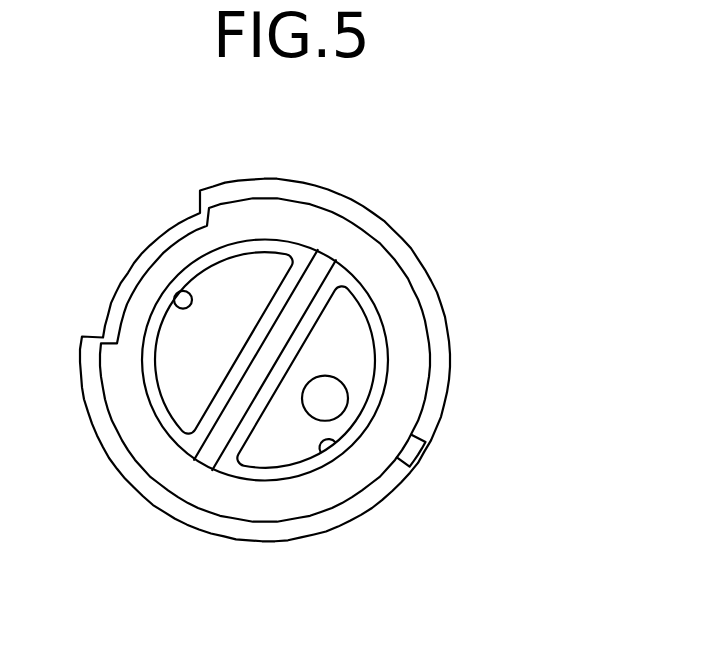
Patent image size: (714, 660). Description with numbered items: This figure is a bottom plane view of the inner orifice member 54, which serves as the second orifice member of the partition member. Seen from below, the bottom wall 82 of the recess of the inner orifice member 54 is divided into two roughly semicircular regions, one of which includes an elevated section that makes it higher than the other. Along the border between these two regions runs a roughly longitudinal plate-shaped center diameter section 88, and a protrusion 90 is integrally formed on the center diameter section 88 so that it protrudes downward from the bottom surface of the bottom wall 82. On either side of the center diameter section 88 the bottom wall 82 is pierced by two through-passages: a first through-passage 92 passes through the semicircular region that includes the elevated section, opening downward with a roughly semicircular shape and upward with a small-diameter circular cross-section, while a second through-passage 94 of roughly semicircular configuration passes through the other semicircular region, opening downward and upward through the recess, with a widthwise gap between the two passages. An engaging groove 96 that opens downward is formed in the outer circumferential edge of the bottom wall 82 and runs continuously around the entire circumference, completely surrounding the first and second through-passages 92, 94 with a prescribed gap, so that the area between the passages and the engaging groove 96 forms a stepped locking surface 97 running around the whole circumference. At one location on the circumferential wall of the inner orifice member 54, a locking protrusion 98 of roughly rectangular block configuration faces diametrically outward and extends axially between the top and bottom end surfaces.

The inner orifice member 54 is at (379, 172).
The bottom wall 82 is at (281, 359).
The center diameter section 88 is at (265, 407).
The protrusion 90 is at (236, 403).
The first through-passage 92 is at (338, 444).
The second through-passage 94 is at (186, 290).
The engaging groove 96 is at (393, 370).
The stepped locking surface 97 is at (376, 316).
The locking protrusion 98 is at (418, 454).